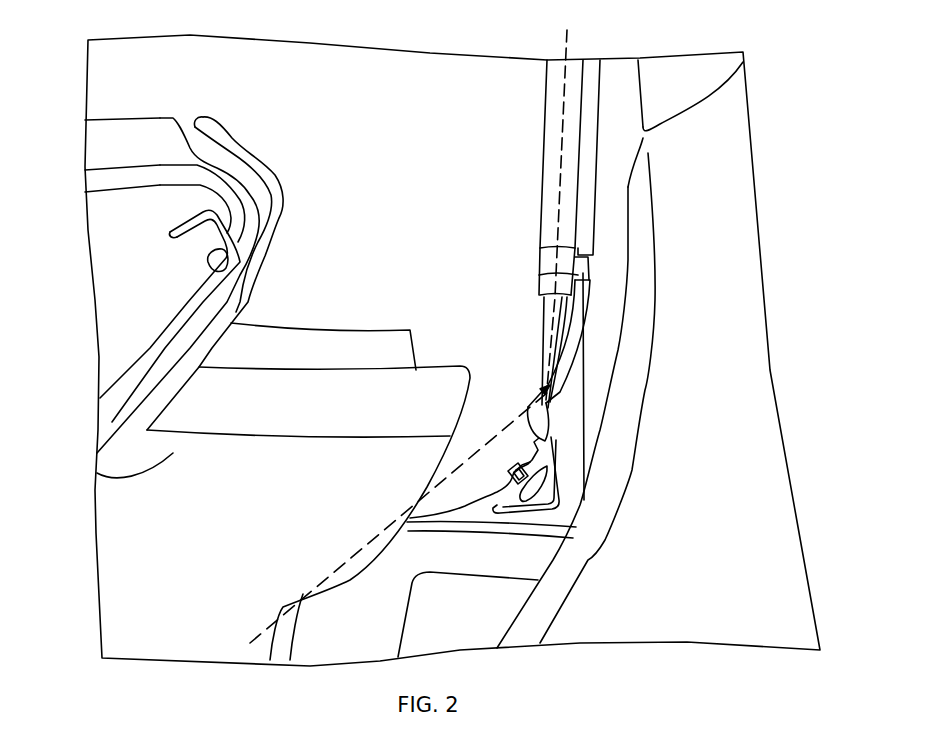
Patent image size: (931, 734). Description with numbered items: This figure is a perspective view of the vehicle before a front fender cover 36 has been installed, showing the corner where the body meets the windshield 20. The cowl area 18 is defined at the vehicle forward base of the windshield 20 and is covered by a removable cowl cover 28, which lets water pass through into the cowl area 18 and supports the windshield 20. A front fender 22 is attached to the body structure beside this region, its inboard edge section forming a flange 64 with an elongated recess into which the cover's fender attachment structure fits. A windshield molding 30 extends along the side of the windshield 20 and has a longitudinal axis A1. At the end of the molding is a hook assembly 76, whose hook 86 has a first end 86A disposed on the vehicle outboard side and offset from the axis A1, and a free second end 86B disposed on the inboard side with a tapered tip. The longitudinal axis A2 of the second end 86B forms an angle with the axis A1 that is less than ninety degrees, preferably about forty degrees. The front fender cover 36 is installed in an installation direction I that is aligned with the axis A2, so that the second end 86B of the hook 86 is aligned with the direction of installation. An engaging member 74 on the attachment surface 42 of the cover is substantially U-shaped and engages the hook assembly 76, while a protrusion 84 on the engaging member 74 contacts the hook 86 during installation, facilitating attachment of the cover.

The cowl area 18 is at (97, 473).
The windshield 20 is at (472, 93).
The front fender 22 is at (747, 538).
The cowl cover 28 is at (150, 543).
The windshield molding 30 is at (536, 157).
The front fender cover 36 is at (134, 113).
The attachment surface 42 is at (122, 218).
The flange 64 is at (607, 477).
The engaging member 74 is at (203, 240).
The hook assembly 76 is at (600, 321).
The protrusion 84 is at (210, 270).
The hook 86 is at (572, 373).
The first end 86A is at (588, 278).
The second end 86B is at (547, 432).
The longitudinal axis A1 is at (568, 44).
The longitudinal axis A2 is at (370, 543).